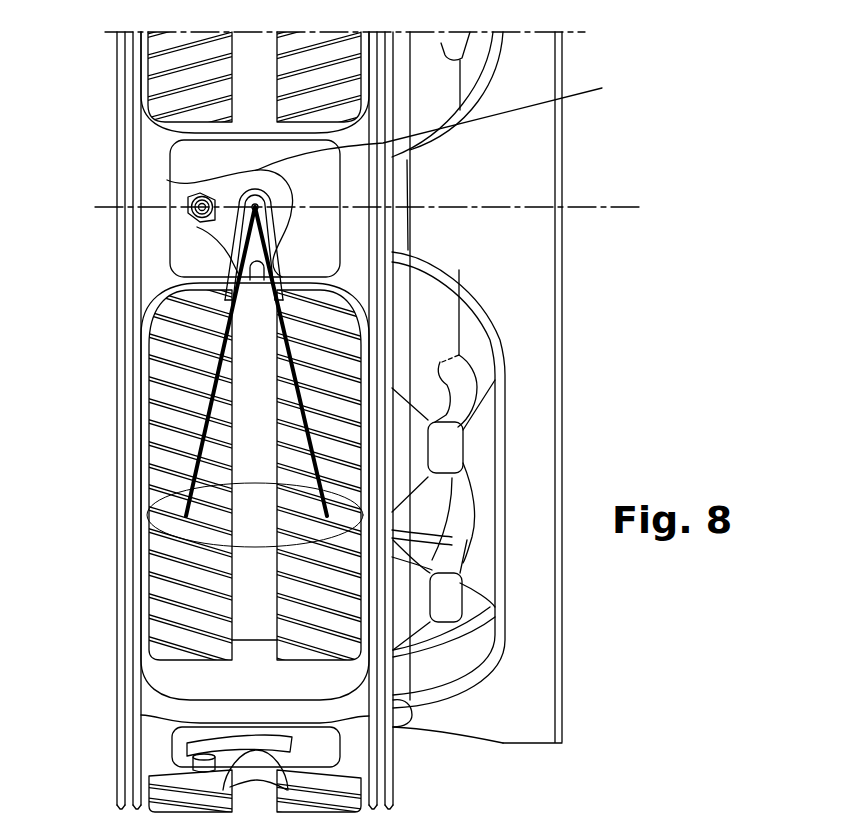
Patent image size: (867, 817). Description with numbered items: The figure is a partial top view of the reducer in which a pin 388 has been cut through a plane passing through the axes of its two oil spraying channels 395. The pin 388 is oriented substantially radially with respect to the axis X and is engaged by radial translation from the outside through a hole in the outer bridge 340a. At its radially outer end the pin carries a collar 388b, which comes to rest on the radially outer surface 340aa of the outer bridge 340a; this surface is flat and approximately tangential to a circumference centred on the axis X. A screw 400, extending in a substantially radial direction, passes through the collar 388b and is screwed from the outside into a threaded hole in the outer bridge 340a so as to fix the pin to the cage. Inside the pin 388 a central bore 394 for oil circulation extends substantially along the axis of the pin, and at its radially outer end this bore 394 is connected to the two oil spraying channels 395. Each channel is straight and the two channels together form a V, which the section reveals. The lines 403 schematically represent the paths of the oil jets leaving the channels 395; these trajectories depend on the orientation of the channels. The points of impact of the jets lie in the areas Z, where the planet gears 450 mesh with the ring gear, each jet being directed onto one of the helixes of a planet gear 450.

The radially outer surface 340aa is at (200, 166).
The screw 400 is at (186, 190).
The pin 388 is at (191, 224).
The outer bridge 340a is at (157, 273).
The lines representing oil jet paths 403 is at (200, 413).
The areas Z is at (160, 500).
The central bore 394 is at (437, 188).
The collar 388b is at (277, 187).
The axis X is at (620, 207).
The oil spraying channels 395 is at (280, 247).
The planet gears 450 is at (338, 650).